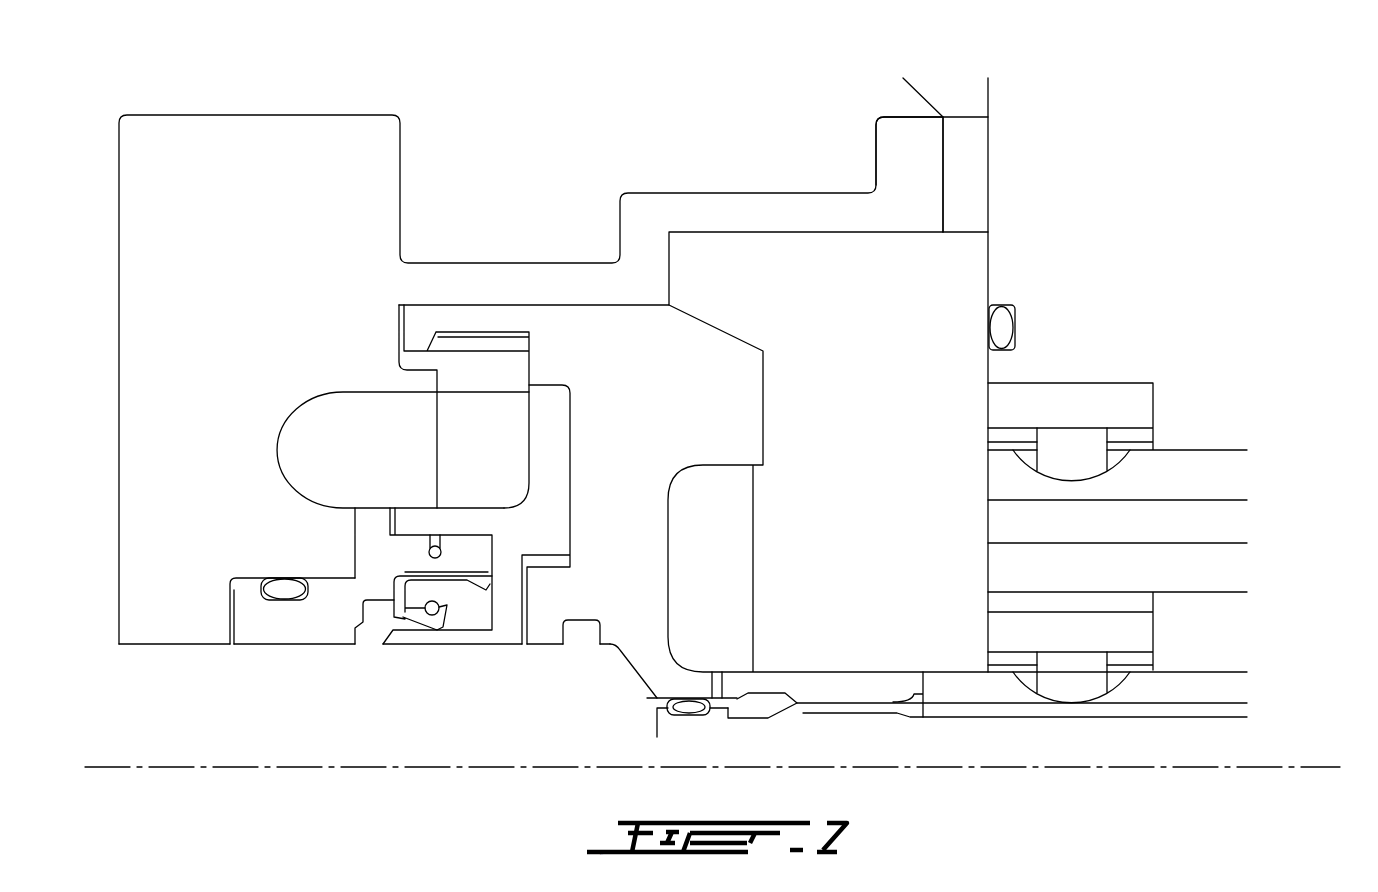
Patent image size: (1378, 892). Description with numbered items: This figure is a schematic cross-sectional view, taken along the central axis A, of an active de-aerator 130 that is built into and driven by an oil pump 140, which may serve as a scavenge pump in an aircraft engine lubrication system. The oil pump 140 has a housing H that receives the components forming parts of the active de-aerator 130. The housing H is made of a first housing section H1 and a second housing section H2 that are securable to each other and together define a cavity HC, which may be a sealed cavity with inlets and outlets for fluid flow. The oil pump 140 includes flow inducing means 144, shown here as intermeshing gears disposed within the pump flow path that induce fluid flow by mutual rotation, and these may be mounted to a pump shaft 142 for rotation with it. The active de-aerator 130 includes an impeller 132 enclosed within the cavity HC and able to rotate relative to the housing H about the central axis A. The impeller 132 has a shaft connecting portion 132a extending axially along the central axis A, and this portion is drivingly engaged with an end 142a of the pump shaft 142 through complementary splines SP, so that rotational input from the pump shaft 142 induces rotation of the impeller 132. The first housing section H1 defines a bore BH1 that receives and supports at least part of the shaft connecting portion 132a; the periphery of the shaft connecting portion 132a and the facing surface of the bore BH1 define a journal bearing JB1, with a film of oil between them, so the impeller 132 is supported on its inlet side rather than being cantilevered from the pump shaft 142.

The active de-aerator 130 is at (655, 126).
The impeller 132 is at (618, 558).
The shaft connecting portion 132a is at (785, 683).
The oil pump 140 is at (1215, 135).
The pump shaft 142 is at (1212, 711).
The end of the pump shaft 142a is at (698, 725).
The flow inducing means 144 is at (1093, 667).
The housing H is at (1015, 160).
The first housing section H1 is at (948, 258).
The second housing section H2 is at (912, 180).
The cavity HC is at (735, 495).
The complementary splines SP is at (850, 713).
The bore BH1 is at (860, 677).
The journal bearing JB1 is at (897, 672).
The central axis A is at (1238, 767).